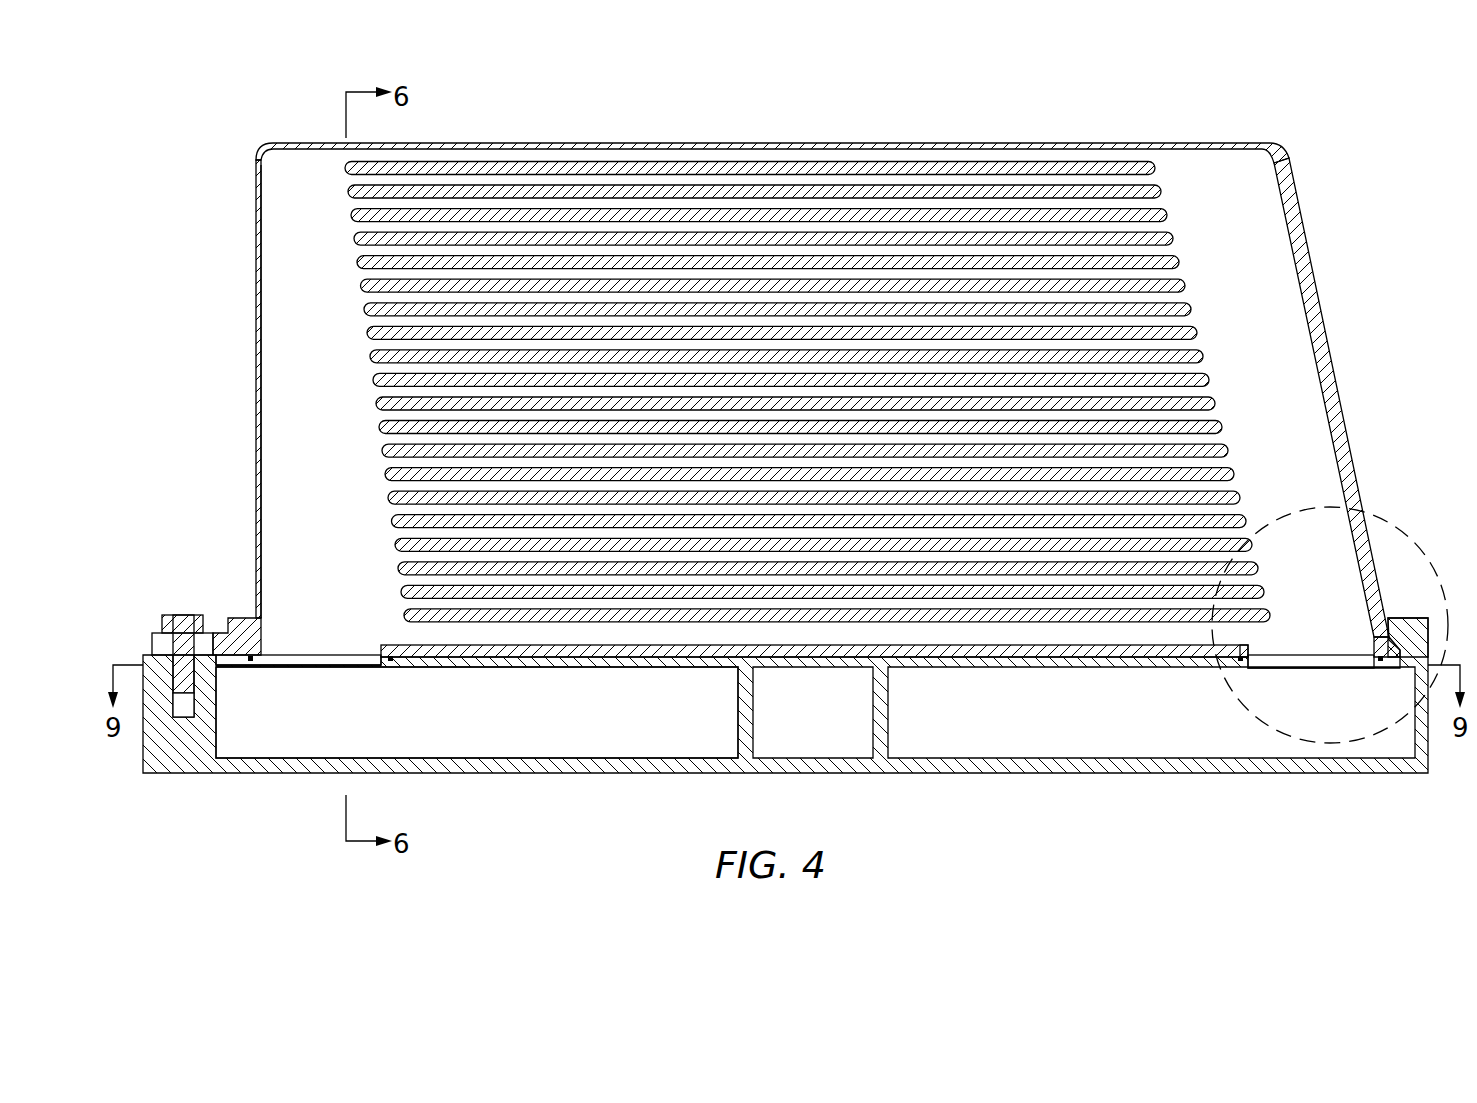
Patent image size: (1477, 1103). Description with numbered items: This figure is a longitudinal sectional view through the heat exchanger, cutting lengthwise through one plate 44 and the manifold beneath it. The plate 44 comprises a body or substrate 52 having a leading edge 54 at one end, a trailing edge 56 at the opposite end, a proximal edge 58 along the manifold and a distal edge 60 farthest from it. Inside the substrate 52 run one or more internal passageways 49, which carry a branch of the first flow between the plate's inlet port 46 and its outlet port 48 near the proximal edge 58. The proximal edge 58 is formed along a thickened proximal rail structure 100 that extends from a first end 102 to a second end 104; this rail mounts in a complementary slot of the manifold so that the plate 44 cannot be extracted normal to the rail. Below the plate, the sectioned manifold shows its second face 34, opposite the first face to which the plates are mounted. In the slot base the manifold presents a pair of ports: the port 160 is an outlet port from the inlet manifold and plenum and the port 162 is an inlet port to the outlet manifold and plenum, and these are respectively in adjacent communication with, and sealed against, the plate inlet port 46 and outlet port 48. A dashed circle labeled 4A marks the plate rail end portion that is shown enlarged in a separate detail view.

The second face 34 is at (610, 773).
The plate 44 is at (782, 390).
The inlet port 46 is at (1312, 655).
The outlet port 48 is at (292, 670).
The internal passageways 49 is at (1268, 398).
The substrate 52 is at (262, 437).
The leading edge 54 is at (257, 382).
The trailing edge 56 is at (1322, 330).
The proximal edge 58 is at (477, 712).
The distal edge 60 is at (841, 143).
The rail structure 100 is at (1376, 660).
The first end 102 is at (1392, 635).
The second end 104 is at (162, 650).
The port 160 is at (1343, 655).
The port 162 is at (313, 655).
The detail circle 4A is at (1395, 522).